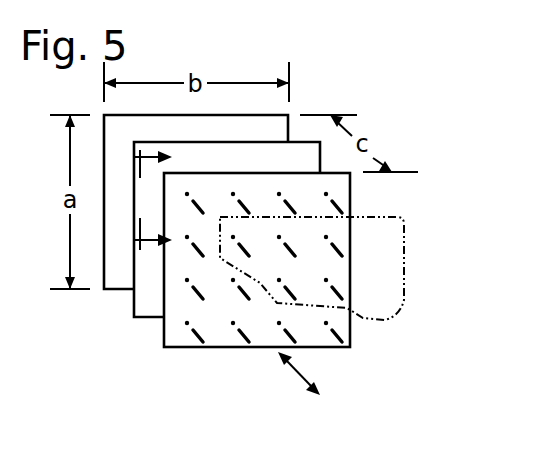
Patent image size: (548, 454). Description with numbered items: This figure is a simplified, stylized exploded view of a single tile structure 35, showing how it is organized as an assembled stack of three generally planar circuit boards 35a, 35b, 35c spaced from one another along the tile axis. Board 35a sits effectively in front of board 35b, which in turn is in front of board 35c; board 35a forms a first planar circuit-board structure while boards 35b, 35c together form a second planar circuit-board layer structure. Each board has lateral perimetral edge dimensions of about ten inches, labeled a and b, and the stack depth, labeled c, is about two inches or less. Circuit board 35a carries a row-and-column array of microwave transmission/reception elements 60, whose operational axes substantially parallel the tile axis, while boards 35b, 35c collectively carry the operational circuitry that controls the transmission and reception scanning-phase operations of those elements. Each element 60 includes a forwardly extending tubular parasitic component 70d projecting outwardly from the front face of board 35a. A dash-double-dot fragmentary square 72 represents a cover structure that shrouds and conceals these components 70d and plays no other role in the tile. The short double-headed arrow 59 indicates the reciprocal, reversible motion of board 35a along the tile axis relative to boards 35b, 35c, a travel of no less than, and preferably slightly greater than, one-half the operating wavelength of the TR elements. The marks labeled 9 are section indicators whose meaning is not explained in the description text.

The tile structure 35 is at (331, 91).
The circuit board 35a is at (185, 340).
The circuit board 35b is at (150, 310).
The circuit board 35c is at (118, 280).
The section line for FIG. 9 is at (164, 199).
The microwave TR elements 60 is at (200, 202).
The tubular parasitic component 70d is at (288, 199).
The cover structure 72 is at (358, 319).
The double-headed arrow 59 is at (297, 373).